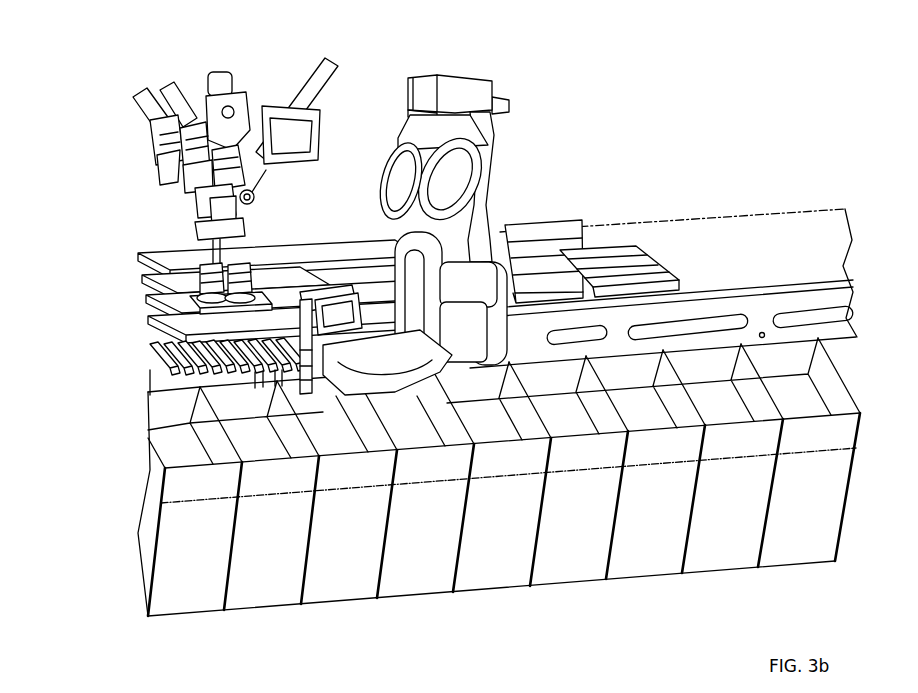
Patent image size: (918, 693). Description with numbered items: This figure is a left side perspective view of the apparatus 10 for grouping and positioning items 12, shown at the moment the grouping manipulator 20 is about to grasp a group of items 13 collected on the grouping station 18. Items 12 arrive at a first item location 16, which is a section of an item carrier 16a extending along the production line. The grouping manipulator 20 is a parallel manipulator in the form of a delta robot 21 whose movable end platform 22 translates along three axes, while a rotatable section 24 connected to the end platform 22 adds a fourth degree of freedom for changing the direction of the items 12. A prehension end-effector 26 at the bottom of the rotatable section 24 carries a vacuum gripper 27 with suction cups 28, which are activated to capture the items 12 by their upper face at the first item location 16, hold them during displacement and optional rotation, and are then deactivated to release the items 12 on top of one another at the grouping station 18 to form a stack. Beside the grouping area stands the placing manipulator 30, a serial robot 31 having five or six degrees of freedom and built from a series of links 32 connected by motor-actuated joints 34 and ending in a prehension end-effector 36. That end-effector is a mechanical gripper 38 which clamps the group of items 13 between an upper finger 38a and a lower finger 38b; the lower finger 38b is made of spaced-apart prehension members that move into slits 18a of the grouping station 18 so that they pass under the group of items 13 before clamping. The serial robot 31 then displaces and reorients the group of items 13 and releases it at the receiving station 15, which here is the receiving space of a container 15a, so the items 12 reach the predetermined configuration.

The apparatus 10 is at (45, 66).
The items 12 is at (637, 280).
The group of items 13 is at (247, 323).
The receiving station 15 is at (252, 432).
The container 15a is at (318, 587).
The first item location 16 is at (165, 312).
The item carrier 16a is at (717, 228).
The grouping station 18 is at (150, 358).
The slits 18a is at (183, 386).
The grouping manipulator 20 is at (278, 80).
The delta robot 21 is at (218, 55).
The end platform 22 is at (208, 212).
The rotatable section 24 is at (197, 247).
The prehension end-effector 26 is at (180, 276).
The vacuum gripper 27 is at (168, 292).
The suction cups 28 is at (247, 270).
The placing manipulator 30 is at (528, 132).
The serial robot 31 is at (522, 96).
The links 32 is at (403, 368).
The motor-actuated joints 34 is at (398, 181).
The prehension end-effector 36 is at (294, 393).
The mechanical gripper 38 is at (430, 327).
The upper finger 38a is at (298, 280).
The lower finger 38b is at (305, 378).